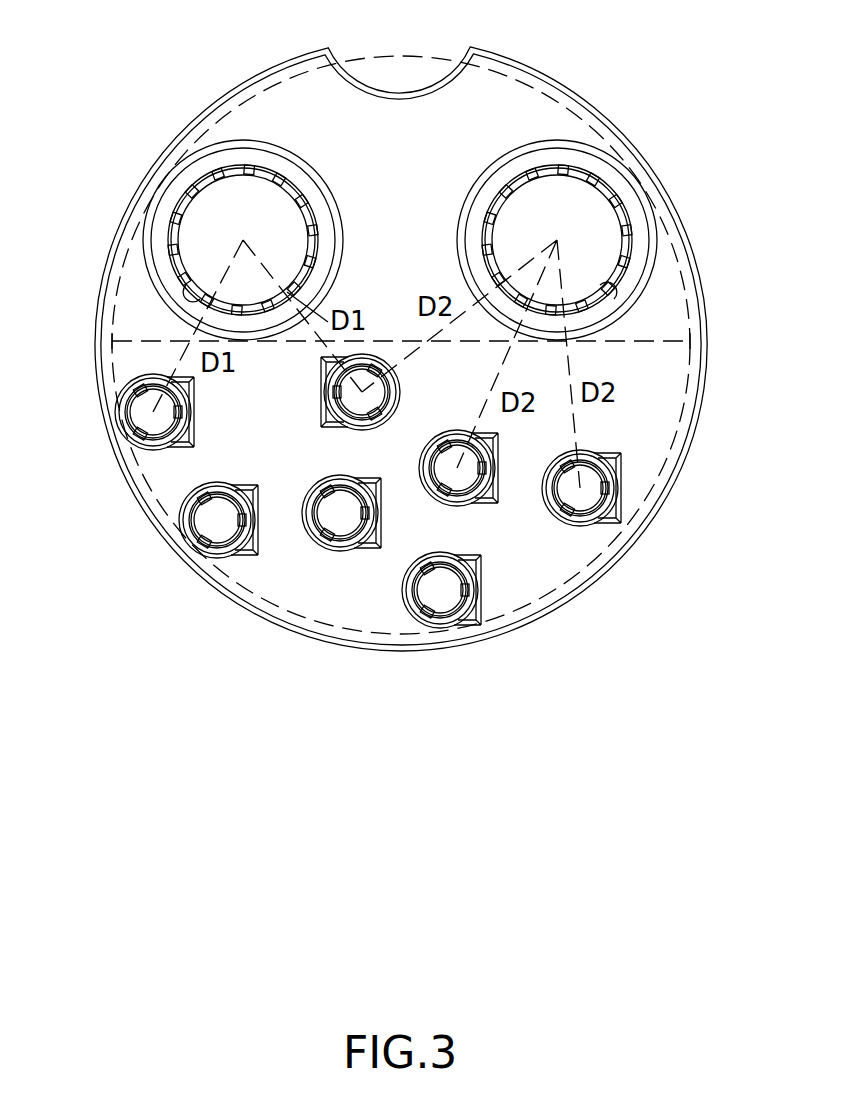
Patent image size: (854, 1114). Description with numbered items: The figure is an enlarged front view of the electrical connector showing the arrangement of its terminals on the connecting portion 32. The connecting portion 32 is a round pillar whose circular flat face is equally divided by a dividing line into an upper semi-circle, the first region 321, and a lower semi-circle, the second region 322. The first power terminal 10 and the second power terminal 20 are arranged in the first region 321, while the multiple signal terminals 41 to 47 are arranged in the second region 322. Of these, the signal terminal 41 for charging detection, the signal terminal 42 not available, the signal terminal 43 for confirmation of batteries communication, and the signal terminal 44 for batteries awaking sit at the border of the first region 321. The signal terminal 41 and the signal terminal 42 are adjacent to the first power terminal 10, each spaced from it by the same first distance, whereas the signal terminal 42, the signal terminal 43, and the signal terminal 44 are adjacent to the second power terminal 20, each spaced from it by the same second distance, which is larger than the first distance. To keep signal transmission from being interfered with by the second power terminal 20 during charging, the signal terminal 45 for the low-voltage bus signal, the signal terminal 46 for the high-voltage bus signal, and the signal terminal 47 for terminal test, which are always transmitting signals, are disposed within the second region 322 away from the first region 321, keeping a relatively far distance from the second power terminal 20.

The first power terminal 10 is at (178, 195).
The second power terminal 20 is at (623, 187).
The connecting portion 32 is at (513, 100).
The first region 321 is at (277, 82).
The second region 322 is at (575, 573).
The signal terminal for charging detection 41 is at (152, 447).
The signal terminal not available 42 is at (342, 425).
The signal terminal for confirmation of batteries communication 43 is at (478, 498).
The signal terminal for batteries awaking 44 is at (620, 523).
The signal terminal for low-voltage bus signal 45 is at (207, 562).
The signal terminal for high-voltage bus signal 46 is at (343, 552).
The signal terminal for terminal test 47 is at (448, 607).